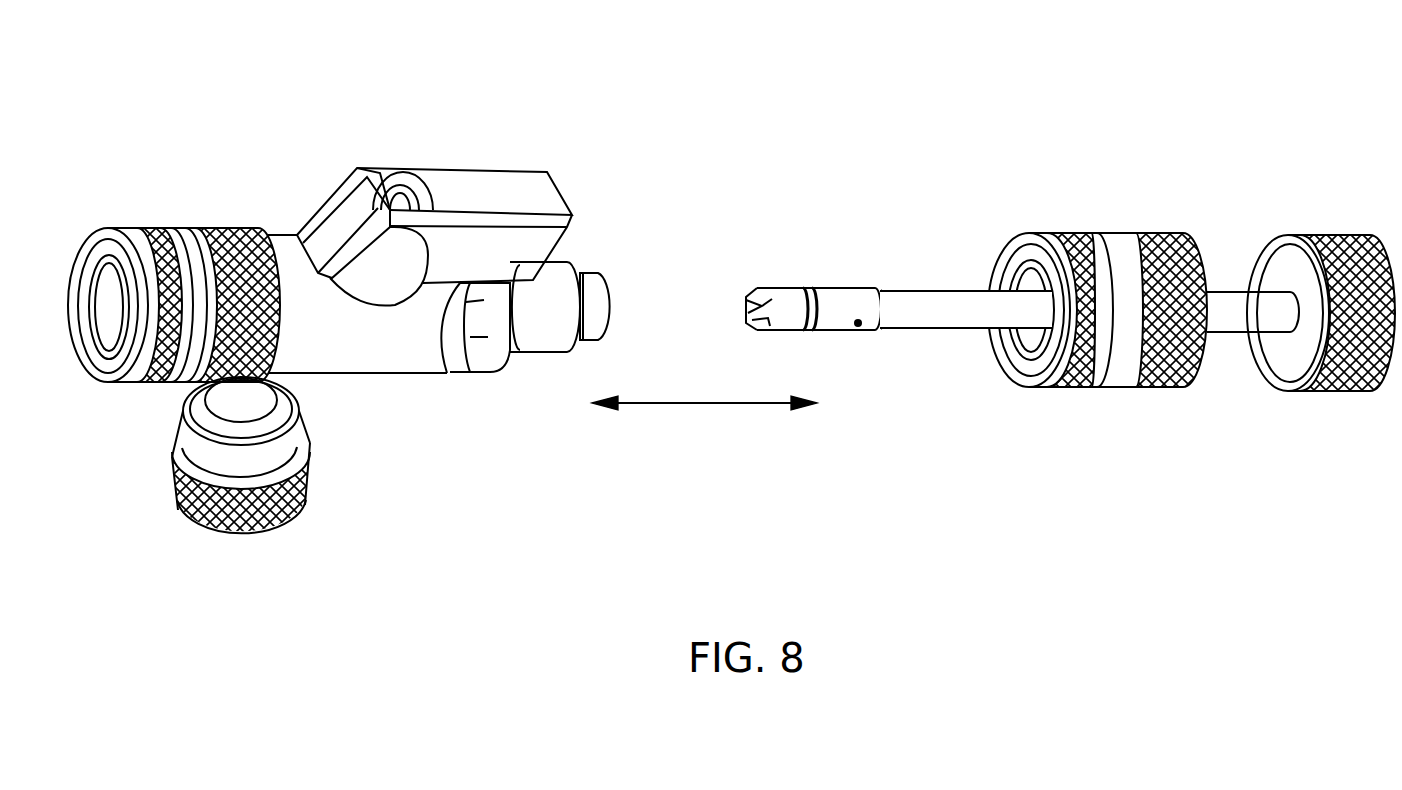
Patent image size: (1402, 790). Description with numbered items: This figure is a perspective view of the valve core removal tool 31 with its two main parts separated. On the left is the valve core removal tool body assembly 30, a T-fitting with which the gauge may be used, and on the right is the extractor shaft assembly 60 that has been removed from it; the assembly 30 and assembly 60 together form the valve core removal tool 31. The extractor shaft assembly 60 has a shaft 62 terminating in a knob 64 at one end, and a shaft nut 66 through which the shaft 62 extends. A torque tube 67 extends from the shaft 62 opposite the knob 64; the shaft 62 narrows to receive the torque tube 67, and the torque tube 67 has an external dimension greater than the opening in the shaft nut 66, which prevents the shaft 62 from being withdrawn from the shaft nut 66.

The valve core removal tool body assembly 30 is at (285, 222).
The valve core removal tool 31 is at (1315, 93).
The extractor shaft assembly 60 is at (1063, 235).
The shaft 62 is at (937, 312).
The knob 64 is at (1345, 394).
The shaft nut 66 is at (1162, 390).
The torque tube 67 is at (837, 298).